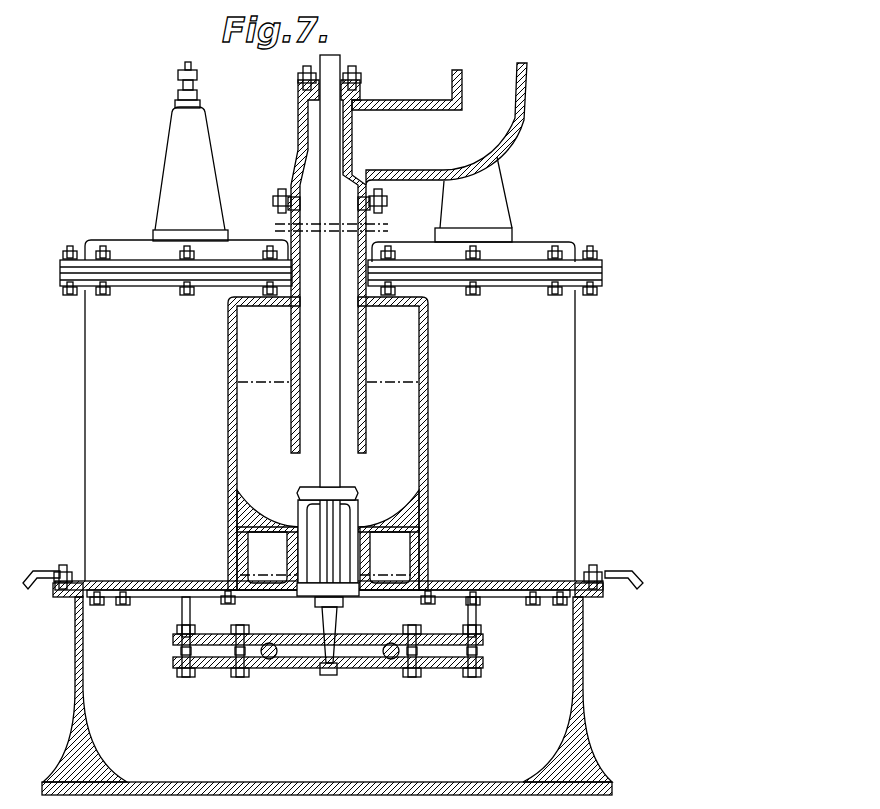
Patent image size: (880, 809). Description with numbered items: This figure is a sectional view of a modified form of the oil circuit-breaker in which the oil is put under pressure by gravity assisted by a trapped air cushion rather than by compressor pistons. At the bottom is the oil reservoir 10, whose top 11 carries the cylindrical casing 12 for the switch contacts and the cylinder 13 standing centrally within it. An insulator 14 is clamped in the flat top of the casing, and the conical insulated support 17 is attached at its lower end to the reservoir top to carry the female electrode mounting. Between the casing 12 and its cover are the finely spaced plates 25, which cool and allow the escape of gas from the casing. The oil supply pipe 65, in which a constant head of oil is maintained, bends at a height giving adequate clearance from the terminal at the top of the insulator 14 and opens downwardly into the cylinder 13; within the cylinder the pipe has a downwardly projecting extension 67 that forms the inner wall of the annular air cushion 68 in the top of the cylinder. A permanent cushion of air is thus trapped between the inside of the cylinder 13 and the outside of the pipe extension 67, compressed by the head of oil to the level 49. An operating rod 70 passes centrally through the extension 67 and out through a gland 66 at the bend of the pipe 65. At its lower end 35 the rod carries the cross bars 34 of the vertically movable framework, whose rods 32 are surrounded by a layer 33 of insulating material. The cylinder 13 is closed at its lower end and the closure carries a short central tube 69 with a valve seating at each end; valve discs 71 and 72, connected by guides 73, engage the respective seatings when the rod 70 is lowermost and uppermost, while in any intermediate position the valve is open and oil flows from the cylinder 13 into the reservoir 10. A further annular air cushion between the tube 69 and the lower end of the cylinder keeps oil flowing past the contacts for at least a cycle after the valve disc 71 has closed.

The oil reservoir 10 is at (356, 790).
The top 11 is at (53, 584).
The cylindrical casing 12 is at (120, 390).
The cylinder 13 is at (427, 400).
The insulator 14 is at (188, 172).
The conical insulated support 17 is at (158, 603).
The plates 25 is at (600, 273).
The rods 32 is at (276, 655).
The layer of insulating material 33 is at (283, 655).
The transverse clamping bars 34 is at (305, 640).
The vertical rod 35 is at (328, 622).
The oil level 49 is at (398, 381).
The oil supply pipe 65 is at (490, 86).
The gland 66 is at (340, 78).
The extension 67 is at (293, 430).
The annular air cushion 68 is at (258, 340).
The central tube 69 is at (362, 560).
The operating rod 70 is at (330, 150).
The valve disc 71 is at (341, 490).
The valve disc 72 is at (300, 585).
The guides 73 is at (329, 528).